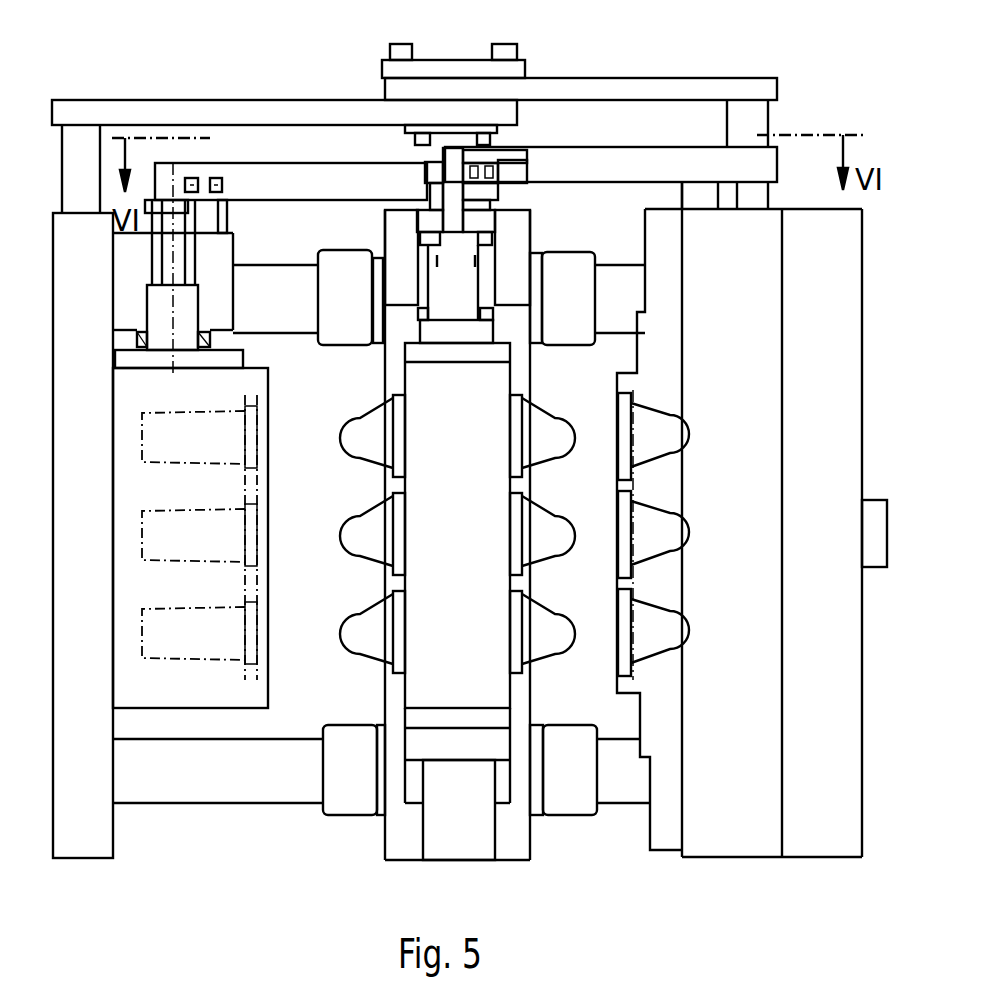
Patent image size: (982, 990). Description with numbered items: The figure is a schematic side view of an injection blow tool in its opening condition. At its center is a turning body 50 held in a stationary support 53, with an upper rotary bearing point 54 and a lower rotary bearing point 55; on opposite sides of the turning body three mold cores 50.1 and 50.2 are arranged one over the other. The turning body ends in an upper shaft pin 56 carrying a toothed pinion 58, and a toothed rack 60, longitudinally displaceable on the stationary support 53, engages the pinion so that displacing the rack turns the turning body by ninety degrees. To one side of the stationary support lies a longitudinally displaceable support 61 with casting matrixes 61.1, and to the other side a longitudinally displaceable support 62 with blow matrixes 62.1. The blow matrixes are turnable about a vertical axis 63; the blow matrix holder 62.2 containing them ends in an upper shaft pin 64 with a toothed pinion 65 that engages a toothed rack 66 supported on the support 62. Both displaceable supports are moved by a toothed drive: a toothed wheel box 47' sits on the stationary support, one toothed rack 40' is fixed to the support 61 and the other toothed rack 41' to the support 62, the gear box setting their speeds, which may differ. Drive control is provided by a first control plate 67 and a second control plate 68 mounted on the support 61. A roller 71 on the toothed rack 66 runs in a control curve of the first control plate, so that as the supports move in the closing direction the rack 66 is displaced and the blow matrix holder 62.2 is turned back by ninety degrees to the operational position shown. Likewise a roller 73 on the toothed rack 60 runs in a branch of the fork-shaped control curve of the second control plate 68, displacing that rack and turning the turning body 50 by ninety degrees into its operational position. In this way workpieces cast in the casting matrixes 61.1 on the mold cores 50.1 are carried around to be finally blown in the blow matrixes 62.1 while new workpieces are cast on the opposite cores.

The toothed rack 40' is at (581, 88).
The toothed rack 41' is at (284, 126).
The toothed wheel box 47' is at (453, 40).
The turning body 50 is at (497, 412).
The mold cores 50.1 is at (548, 420).
The mold cores 50.2 is at (360, 418).
The stationary support 53 is at (512, 247).
The upper rotary bearing point 54 is at (417, 232).
The lower rotary bearing point 55 is at (410, 793).
The upper shaft pin 56 is at (423, 185).
The toothed pinion 58 is at (418, 192).
The toothed rack 60 is at (507, 190).
The longitudinally displaceable support 61 is at (747, 378).
The casting matrixes 61.1 is at (681, 452).
The longitudinally displaceable support 62 is at (92, 495).
The blow matrixes 62.1 is at (174, 420).
The blow matrix holder 62.2 is at (252, 696).
The vertical axis 63 is at (175, 333).
The upper shaft pin 64 is at (207, 255).
The toothed pinion 65 is at (153, 243).
The toothed rack 66 is at (218, 232).
The first control plate 67 is at (320, 200).
The second control plate 68 is at (639, 180).
The roller 71 is at (193, 200).
The roller 73 is at (512, 163).